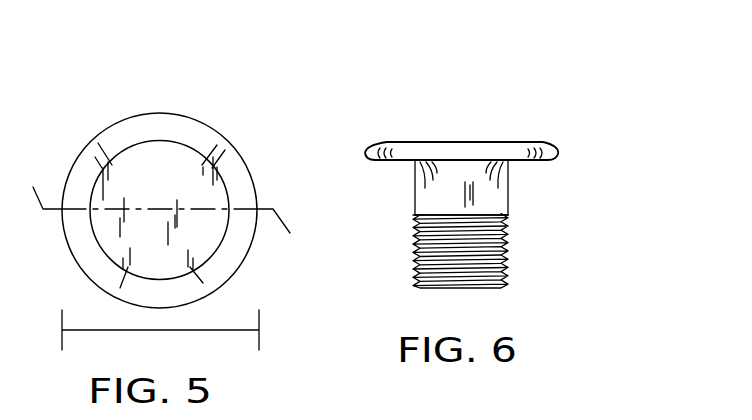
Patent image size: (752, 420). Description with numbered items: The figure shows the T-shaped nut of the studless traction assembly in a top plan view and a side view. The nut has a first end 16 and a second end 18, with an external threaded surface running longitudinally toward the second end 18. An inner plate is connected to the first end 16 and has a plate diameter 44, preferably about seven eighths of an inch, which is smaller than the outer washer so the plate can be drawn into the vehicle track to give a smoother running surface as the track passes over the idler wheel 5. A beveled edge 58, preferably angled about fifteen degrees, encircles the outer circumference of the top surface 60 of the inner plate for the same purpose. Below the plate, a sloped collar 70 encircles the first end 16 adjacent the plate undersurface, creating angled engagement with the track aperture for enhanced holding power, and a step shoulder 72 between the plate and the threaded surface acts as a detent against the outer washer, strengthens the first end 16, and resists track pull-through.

In FIG. 5, the idler wheel 5 is at (158, 214).
In FIG. 5, the first end 16 is at (143, 168).
In FIG. 6, the first end 16 is at (433, 146).
In FIG. 6, the second end 18 is at (503, 288).
In FIG. 5, the plate diameter 44 is at (160, 337).
In FIG. 6, the beveled edge 58 is at (375, 142).
In FIG. 5, the top surface 60 is at (185, 177).
In FIG. 6, the top surface 60 is at (490, 142).
In FIG. 6, the sloped collar 70 is at (510, 165).
In FIG. 6, the step shoulder 72 is at (415, 213).